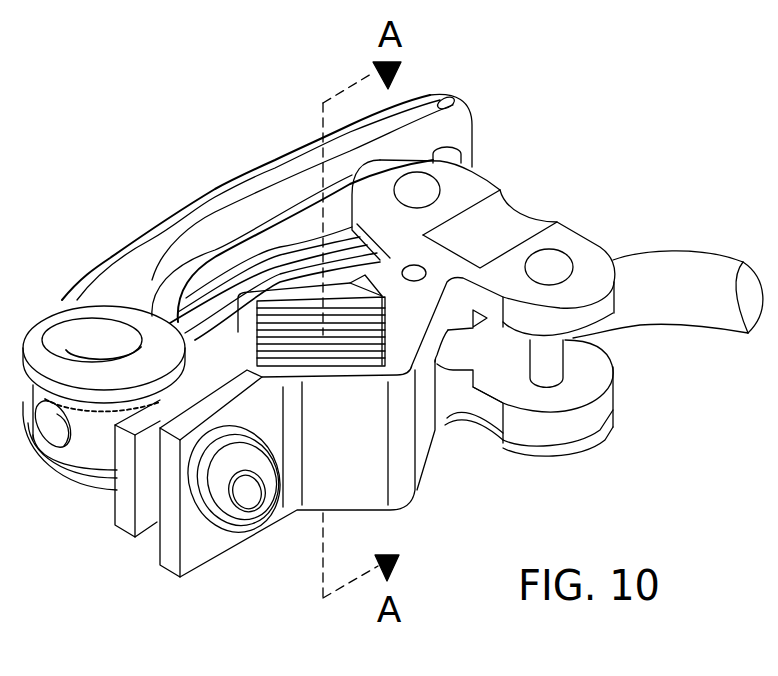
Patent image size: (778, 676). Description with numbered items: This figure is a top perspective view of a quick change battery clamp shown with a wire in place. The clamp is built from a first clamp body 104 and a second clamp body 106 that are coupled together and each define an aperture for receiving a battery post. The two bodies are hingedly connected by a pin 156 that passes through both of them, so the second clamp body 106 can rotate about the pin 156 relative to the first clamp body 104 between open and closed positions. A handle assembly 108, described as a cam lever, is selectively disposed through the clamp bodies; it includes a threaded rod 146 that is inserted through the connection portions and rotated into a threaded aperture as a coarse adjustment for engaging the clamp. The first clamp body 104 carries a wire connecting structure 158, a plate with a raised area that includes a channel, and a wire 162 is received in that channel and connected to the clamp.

The first clamp body 104 is at (423, 420).
The second clamp body 106 is at (165, 330).
The handle assembly 108 is at (33, 322).
The threaded rod 146 is at (247, 490).
The pin 156 is at (412, 272).
The wire connecting structure 158 is at (478, 190).
The wire 162 is at (634, 262).